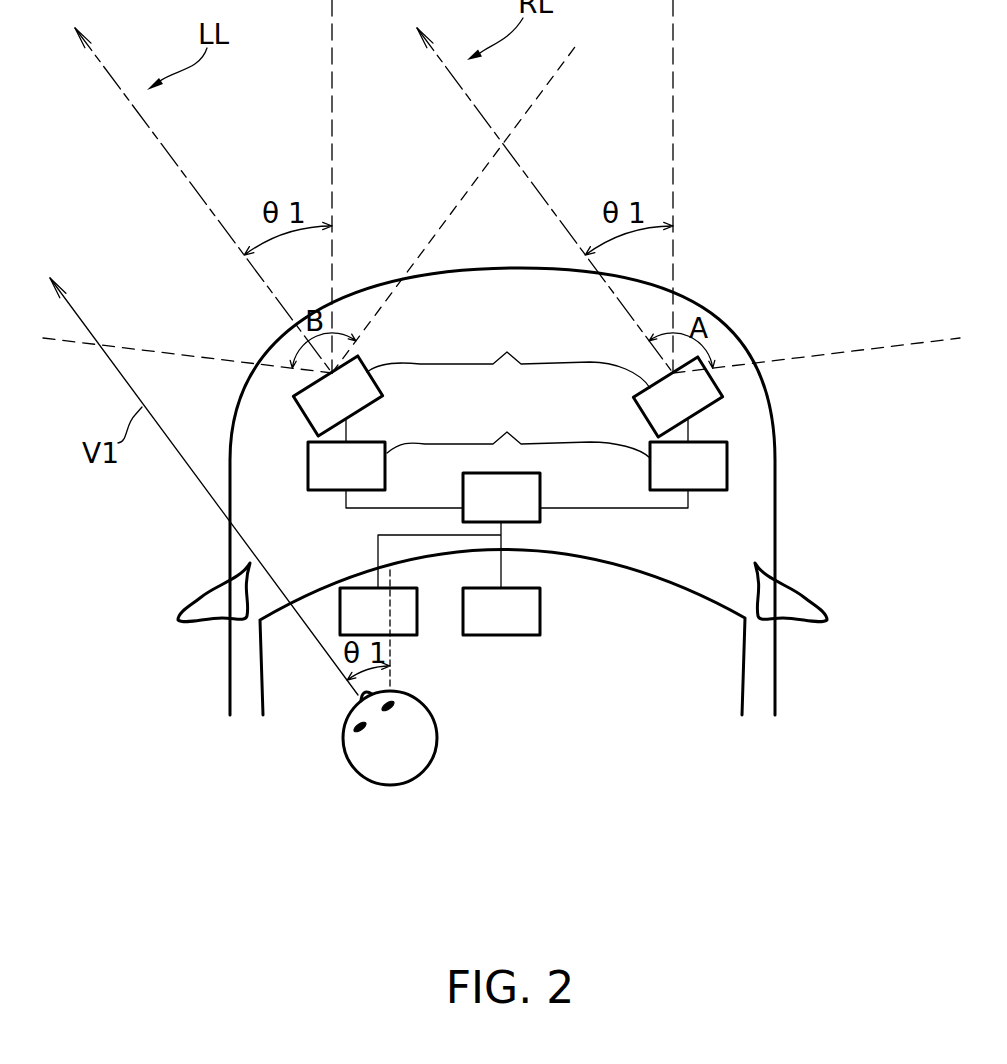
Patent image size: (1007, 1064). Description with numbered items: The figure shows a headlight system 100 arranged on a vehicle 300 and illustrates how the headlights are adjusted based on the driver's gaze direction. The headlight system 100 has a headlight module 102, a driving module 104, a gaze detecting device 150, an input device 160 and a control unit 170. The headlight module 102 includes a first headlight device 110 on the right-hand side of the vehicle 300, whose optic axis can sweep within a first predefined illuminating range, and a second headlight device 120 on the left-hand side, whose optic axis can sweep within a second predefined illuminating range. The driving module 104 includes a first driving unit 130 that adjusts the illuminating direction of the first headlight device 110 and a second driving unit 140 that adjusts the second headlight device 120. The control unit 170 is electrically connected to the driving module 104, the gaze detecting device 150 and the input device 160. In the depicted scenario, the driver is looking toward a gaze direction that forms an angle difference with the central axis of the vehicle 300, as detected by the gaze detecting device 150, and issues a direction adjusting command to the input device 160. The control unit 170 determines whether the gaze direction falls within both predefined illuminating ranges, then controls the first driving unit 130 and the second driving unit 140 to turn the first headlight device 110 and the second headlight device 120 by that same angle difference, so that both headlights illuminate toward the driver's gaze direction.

The headlight system 100 is at (597, 542).
The headlight module 102 is at (508, 354).
The driving module 104 is at (518, 429).
The first headlight device 110 is at (657, 413).
The second headlight device 120 is at (317, 412).
The first driving unit 130 is at (668, 483).
The second driving unit 140 is at (326, 483).
The gaze detecting device 150 is at (358, 628).
The input device 160 is at (481, 628).
The control unit 170 is at (481, 514).
The vehicle 300 is at (778, 487).